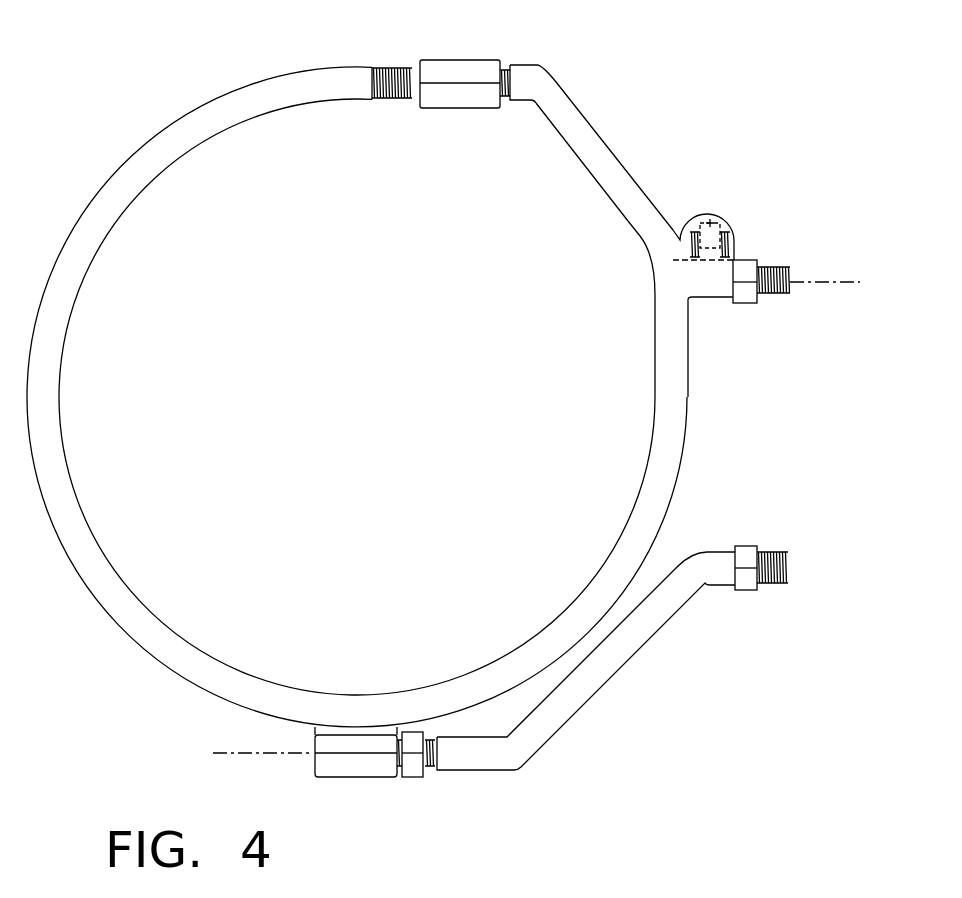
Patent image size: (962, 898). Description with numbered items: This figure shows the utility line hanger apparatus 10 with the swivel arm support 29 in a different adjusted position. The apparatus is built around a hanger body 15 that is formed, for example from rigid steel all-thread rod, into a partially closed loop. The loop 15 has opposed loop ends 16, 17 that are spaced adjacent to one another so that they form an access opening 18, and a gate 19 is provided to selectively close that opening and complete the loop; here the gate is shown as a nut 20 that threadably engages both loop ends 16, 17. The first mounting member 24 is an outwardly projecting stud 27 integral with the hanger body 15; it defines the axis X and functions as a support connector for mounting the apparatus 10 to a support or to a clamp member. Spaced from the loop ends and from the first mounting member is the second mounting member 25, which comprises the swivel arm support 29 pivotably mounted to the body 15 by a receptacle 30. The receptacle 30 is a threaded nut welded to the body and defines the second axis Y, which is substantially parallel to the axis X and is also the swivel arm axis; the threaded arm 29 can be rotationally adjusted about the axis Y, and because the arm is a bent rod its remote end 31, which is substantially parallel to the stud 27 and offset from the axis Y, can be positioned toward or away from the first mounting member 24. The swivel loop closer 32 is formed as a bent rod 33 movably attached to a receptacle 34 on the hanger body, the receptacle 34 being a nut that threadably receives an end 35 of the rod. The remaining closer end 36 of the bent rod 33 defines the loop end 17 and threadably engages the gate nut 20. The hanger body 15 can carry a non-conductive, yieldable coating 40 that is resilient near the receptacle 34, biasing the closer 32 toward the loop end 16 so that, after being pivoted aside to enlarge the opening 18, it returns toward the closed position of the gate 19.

The utility line hanger apparatus 10 is at (357, 386).
The hanger body 15 is at (70, 395).
The loop end 16 is at (410, 100).
The loop end 17 is at (503, 82).
The access opening 18 is at (412, 72).
The gate 19 is at (455, 75).
The nut 20 is at (478, 98).
The first mounting member 24 is at (778, 311).
The second mounting member 25 is at (586, 661).
The stud 27 is at (789, 276).
The swivel arm support 29 is at (662, 656).
The receptacle 30 is at (357, 768).
The remote end 31 is at (770, 553).
The swivel loop closer 32 is at (591, 137).
The bent rod 33 is at (595, 140).
The receptacle 34 is at (712, 213).
The end of bent rod 35 is at (670, 255).
The closer end 36 is at (543, 80).
The coating 40 is at (670, 467).
The axis X is at (843, 283).
The axis Y is at (225, 753).